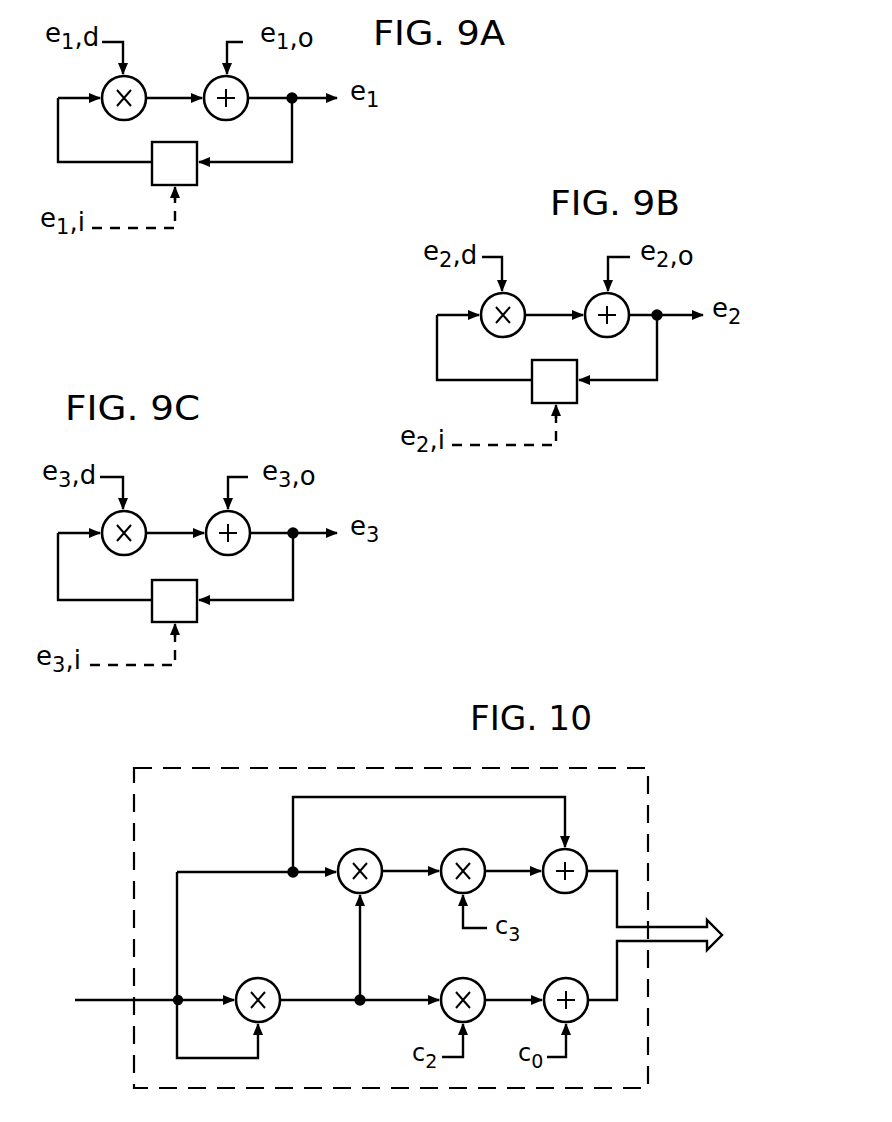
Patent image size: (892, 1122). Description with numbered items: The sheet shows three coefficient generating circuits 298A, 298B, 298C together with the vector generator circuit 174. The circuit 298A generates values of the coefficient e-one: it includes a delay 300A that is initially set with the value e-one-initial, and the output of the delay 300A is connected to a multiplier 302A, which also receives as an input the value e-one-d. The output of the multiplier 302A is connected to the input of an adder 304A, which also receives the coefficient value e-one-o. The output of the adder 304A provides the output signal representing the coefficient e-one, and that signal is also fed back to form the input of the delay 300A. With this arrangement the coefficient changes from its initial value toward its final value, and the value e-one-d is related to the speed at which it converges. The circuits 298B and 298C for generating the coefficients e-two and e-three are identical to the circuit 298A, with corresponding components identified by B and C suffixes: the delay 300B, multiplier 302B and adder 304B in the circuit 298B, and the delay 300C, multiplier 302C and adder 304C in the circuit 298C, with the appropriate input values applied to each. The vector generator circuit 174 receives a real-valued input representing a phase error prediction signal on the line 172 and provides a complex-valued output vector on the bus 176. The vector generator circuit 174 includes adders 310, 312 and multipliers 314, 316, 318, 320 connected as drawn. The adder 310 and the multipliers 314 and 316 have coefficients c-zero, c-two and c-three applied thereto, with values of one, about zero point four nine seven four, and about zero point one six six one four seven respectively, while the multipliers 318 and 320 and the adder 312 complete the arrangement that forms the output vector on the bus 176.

In FIG. 9A, the multiplier 302A is at (130, 116).
In FIG. 9A, the adder 304A is at (210, 80).
In FIG. 9A, the delay 300A is at (191, 178).
In FIG. 9A, the circuit 298A is at (306, 148).
In FIG. 9B, the multiplier 302B is at (510, 333).
In FIG. 9B, the adder 304B is at (592, 299).
In FIG. 9B, the delay 300B is at (536, 397).
In FIG. 9B, the circuit 298B is at (618, 393).
In FIG. 9C, the multiplier 302C is at (131, 552).
In FIG. 9C, the adder 304C is at (213, 518).
In FIG. 9C, the delay 300C is at (189, 613).
In FIG. 9C, the circuit 298C is at (306, 601).
In FIG. 10, the vector generator circuit 174 is at (335, 768).
In FIG. 10, the line 172 is at (110, 998).
In FIG. 10, the bus 176 is at (667, 927).
In FIG. 10, the adder 310 is at (556, 982).
In FIG. 10, the adder 312 is at (580, 857).
In FIG. 10, the multiplier 314 is at (452, 985).
In FIG. 10, the multiplier 316 is at (455, 852).
In FIG. 10, the multiplier 318 is at (351, 852).
In FIG. 10, the multiplier 320 is at (256, 978).